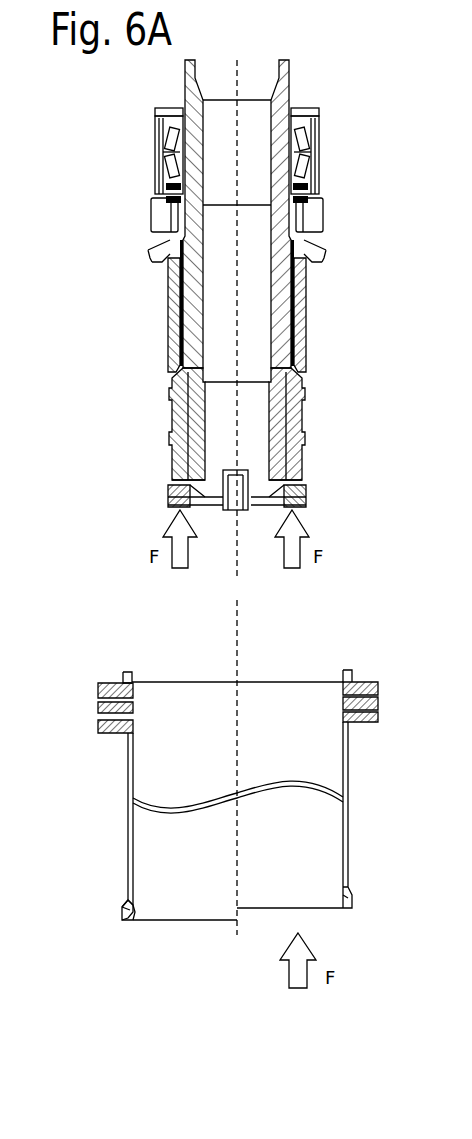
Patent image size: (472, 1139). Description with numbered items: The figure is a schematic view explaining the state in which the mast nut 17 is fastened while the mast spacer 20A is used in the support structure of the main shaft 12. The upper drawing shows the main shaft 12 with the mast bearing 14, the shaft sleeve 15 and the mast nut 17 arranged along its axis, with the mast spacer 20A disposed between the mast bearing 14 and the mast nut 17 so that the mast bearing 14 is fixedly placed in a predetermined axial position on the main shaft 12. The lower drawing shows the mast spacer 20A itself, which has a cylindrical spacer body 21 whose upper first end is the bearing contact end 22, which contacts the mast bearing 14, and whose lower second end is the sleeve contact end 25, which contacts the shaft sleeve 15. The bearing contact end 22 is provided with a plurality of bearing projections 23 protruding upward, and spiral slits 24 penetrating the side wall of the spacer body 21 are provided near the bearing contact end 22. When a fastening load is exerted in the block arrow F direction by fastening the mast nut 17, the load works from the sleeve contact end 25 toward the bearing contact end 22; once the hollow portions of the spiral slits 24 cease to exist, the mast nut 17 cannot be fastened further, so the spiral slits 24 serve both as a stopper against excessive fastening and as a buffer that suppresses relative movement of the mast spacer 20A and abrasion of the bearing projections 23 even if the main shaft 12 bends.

The main shaft 12 is at (176, 285).
The mast bearing 14 is at (157, 168).
The shaft sleeve 15 is at (301, 383).
The mast nut 17 is at (305, 498).
The mast spacer 20A is at (315, 228).
The spacer body 21 is at (350, 850).
The bearing contact end 22 is at (113, 682).
The bearing projections 23 is at (128, 672).
The spiral slits 24 is at (98, 726).
The sleeve contact end 25 is at (123, 912).